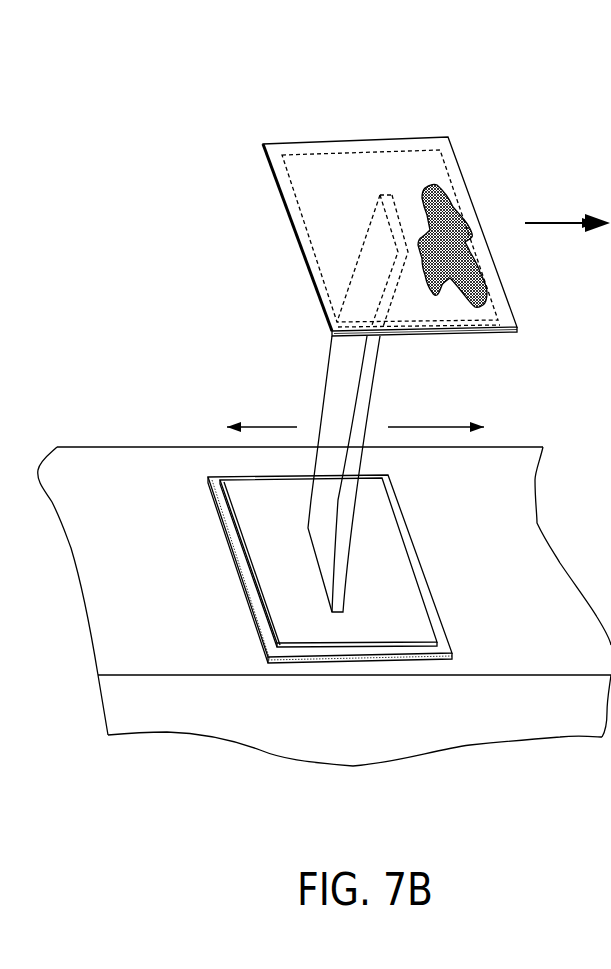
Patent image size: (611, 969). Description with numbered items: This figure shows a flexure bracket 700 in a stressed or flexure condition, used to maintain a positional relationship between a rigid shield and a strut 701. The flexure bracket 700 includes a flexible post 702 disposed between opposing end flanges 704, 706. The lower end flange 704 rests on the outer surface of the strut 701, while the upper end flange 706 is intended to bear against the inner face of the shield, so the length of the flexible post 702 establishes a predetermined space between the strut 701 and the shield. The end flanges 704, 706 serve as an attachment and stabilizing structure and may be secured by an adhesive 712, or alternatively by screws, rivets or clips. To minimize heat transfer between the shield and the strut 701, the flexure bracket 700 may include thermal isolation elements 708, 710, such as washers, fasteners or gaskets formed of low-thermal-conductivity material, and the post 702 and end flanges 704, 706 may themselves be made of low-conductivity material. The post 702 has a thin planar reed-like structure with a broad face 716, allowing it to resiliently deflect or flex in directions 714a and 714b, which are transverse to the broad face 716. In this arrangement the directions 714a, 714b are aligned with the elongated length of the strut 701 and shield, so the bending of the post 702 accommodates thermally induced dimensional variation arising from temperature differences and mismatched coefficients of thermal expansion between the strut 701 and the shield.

The flexure bracket 700 is at (156, 91).
The strut 701 is at (180, 461).
The flexible post 702 is at (373, 367).
The end flange 704 is at (316, 570).
The end flange 706 is at (495, 308).
The thermal isolation element 708 is at (260, 602).
The thermal isolation element 710 is at (297, 233).
The adhesive 712 is at (470, 178).
The flexure direction 714a is at (245, 426).
The flexure direction 714b is at (409, 426).
The broad face 716 is at (337, 388).